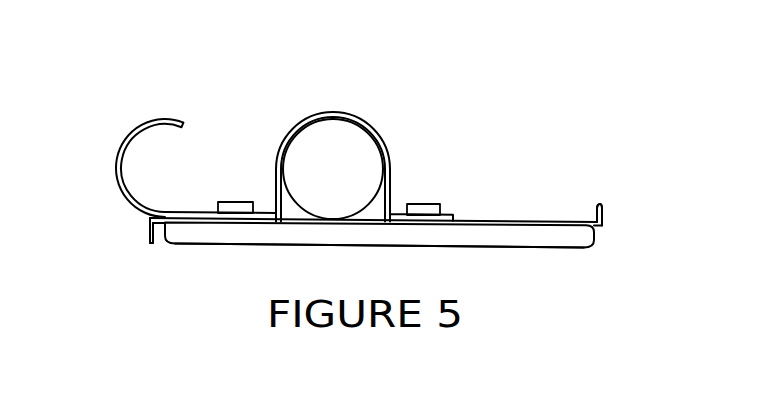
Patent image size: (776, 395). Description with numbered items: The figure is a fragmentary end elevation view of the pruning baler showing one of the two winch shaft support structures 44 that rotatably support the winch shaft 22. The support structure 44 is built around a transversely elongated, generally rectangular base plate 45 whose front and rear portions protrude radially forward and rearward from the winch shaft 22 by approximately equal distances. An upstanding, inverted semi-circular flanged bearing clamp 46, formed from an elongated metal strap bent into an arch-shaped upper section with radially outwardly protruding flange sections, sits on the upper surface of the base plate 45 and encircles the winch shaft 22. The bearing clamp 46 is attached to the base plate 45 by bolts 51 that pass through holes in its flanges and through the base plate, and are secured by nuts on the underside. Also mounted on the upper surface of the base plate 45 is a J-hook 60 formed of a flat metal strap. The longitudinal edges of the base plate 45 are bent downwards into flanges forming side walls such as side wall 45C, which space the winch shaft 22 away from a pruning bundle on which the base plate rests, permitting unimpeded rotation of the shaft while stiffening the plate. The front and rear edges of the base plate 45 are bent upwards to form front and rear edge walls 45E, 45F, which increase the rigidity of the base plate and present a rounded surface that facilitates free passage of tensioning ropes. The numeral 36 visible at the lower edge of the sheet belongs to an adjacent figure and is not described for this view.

The winch shaft support structure 44 is at (447, 70).
The base plate 45 is at (522, 222).
The front edge wall 45E is at (150, 240).
The rear edge wall 45F is at (607, 212).
The side wall 45C is at (480, 233).
The J-hook 60 is at (153, 119).
The bearing clamp 46 is at (312, 118).
The winch shaft 22 is at (358, 157).
The bolt 51 is at (218, 202).
The numeral of adjacent figure 36 is at (488, 383).